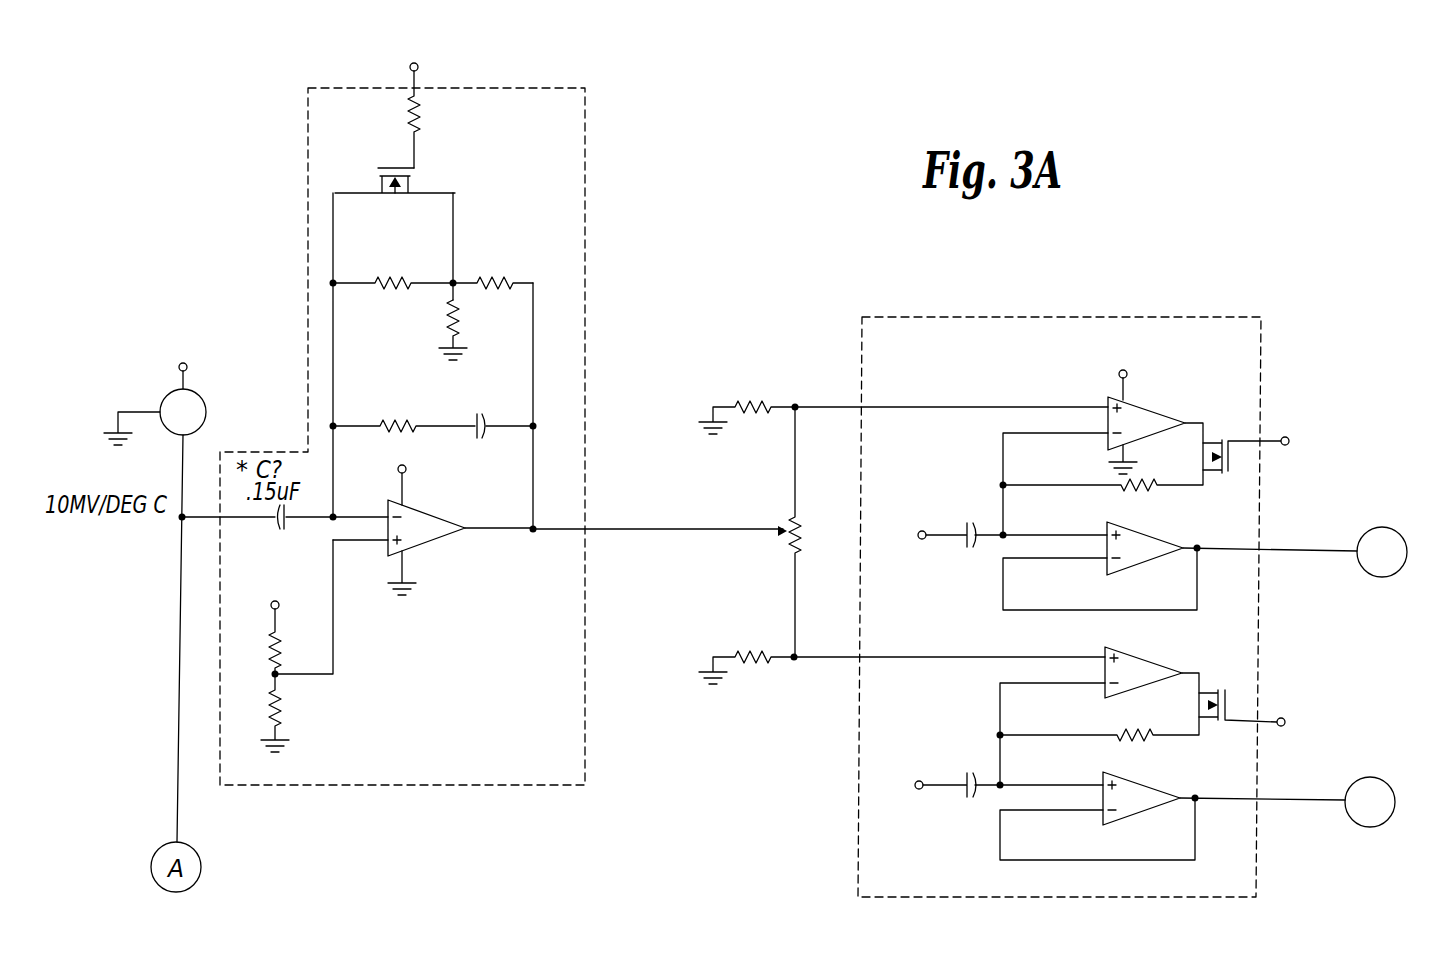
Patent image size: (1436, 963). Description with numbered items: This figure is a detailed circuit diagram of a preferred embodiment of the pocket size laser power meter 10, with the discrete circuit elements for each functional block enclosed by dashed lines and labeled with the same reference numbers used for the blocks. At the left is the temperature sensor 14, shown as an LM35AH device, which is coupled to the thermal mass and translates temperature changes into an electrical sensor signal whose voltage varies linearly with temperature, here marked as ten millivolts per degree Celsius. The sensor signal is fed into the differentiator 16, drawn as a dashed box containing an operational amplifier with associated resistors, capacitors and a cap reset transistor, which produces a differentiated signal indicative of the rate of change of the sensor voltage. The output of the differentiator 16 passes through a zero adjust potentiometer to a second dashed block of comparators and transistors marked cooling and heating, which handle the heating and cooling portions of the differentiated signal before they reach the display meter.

The laser power meter 10 is at (1233, 230).
The temperature sensor 14 is at (160, 400).
The differentiator 16 is at (568, 163).